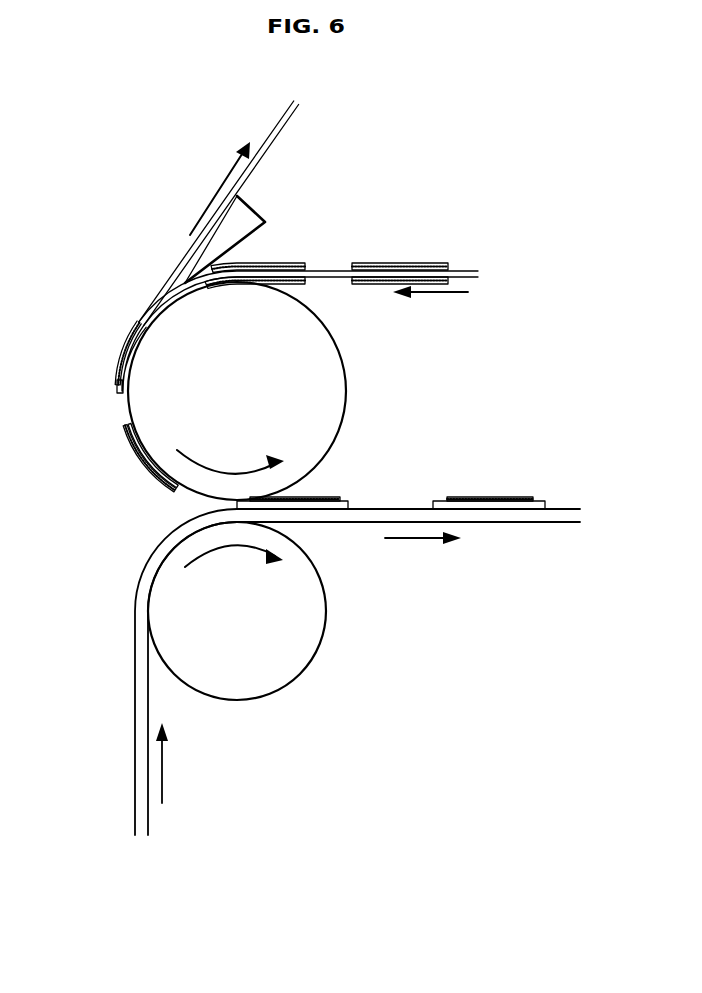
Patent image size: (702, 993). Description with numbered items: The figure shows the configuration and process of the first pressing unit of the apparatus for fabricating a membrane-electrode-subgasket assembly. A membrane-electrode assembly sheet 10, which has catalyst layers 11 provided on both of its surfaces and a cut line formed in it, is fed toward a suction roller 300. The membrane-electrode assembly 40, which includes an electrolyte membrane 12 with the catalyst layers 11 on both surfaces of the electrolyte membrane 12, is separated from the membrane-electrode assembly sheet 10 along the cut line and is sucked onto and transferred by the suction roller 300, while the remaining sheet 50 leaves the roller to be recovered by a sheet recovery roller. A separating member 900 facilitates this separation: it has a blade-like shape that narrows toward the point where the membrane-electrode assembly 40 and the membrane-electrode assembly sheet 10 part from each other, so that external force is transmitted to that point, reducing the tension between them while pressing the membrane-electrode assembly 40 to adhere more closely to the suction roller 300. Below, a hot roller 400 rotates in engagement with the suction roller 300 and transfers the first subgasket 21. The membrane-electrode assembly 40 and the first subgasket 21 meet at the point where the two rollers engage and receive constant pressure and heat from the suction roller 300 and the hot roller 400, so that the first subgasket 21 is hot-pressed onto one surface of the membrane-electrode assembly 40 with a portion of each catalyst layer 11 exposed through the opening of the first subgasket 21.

The membrane-electrode assembly sheet 10 is at (462, 271).
The catalyst layer 11 is at (406, 266).
The electrolyte membrane 12 is at (127, 425).
The first subgasket 21 is at (139, 708).
The membrane-electrode assembly 40 is at (137, 469).
The remaining sheet 50 is at (278, 120).
The suction roller 300 is at (345, 382).
The hot roller 400 is at (325, 601).
The separating member 900 is at (258, 203).